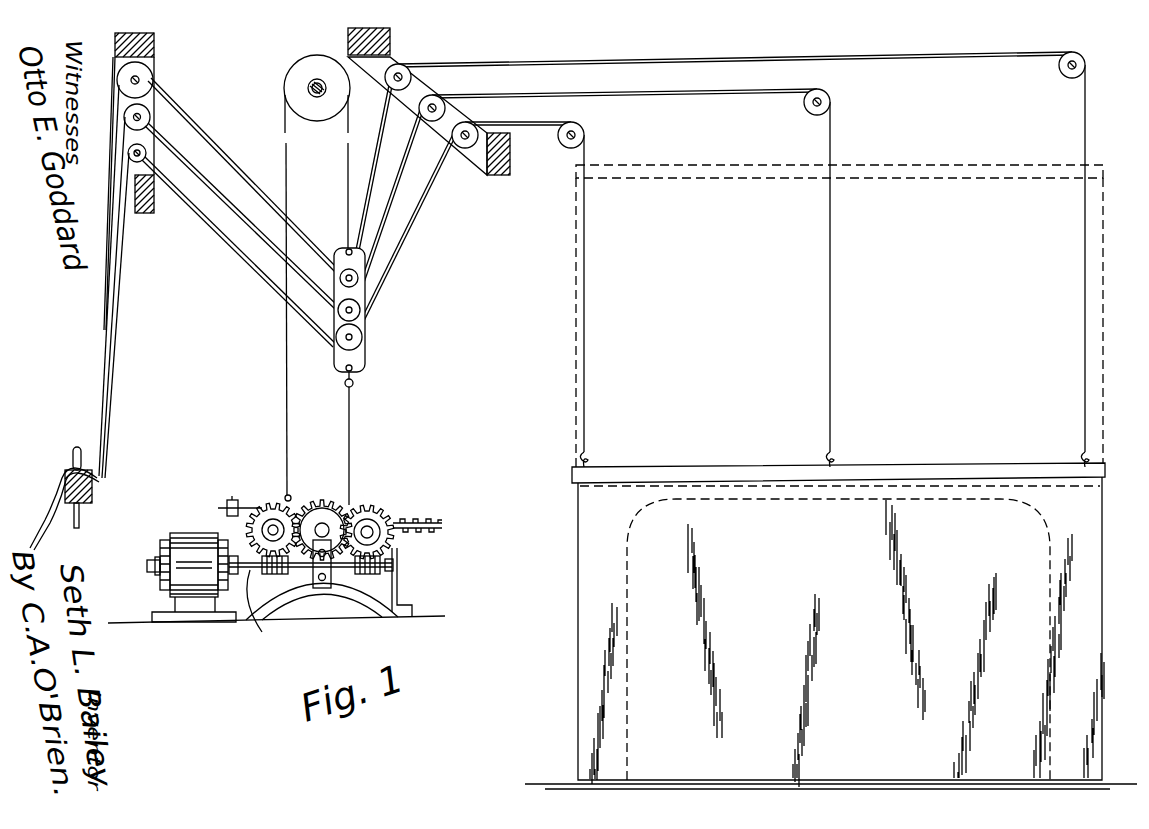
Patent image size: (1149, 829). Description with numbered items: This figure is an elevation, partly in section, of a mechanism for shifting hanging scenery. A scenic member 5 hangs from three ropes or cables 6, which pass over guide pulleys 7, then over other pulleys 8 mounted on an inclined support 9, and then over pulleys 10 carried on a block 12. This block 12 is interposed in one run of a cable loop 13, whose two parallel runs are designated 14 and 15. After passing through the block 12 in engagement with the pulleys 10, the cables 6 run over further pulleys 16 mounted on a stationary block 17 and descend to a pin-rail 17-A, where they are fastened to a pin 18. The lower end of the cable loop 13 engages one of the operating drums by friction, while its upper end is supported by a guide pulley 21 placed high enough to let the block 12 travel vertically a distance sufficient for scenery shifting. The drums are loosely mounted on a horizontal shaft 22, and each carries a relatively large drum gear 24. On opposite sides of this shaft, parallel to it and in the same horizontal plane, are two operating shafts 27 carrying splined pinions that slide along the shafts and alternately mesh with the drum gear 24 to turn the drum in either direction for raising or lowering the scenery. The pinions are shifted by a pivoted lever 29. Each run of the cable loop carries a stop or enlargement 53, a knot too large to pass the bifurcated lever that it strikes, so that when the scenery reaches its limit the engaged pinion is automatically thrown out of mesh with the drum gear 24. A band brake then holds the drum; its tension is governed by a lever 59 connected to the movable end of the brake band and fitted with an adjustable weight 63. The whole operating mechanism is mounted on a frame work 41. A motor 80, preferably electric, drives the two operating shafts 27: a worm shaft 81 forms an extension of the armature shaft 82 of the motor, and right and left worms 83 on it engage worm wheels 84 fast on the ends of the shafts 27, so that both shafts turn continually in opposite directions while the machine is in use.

The scenic member 5 is at (831, 477).
The ropes or cables 6 is at (214, 142).
The guide pulleys 7 is at (585, 132).
The pulleys 8 is at (398, 90).
The inclined support 9 is at (428, 82).
The pulleys 10 is at (356, 275).
The block 12 is at (370, 352).
The cable loop 13 is at (316, 172).
The run of cable loop 14 is at (352, 406).
The run of cable loop 15 is at (284, 376).
The pulleys 16 is at (145, 70).
The stationary block 17 is at (124, 98).
The pin-rail 17-A is at (100, 483).
The pin 18 is at (70, 452).
The guide pulley 21 is at (309, 64).
The horizontal shaft 22 is at (325, 515).
The drum gear 24 is at (330, 507).
The operating shafts 27 is at (270, 520).
The lever 29 is at (442, 523).
The frame work 41 is at (335, 584).
The stop or enlargement 53 is at (345, 386).
The lever 59 is at (230, 499).
The adjustable weight 63 is at (236, 497).
The motor 80 is at (196, 528).
The worm shaft 81 is at (268, 609).
The armature shaft 82 is at (153, 560).
The right and left worms 83 is at (340, 572).
The worm wheels 84 is at (255, 522).